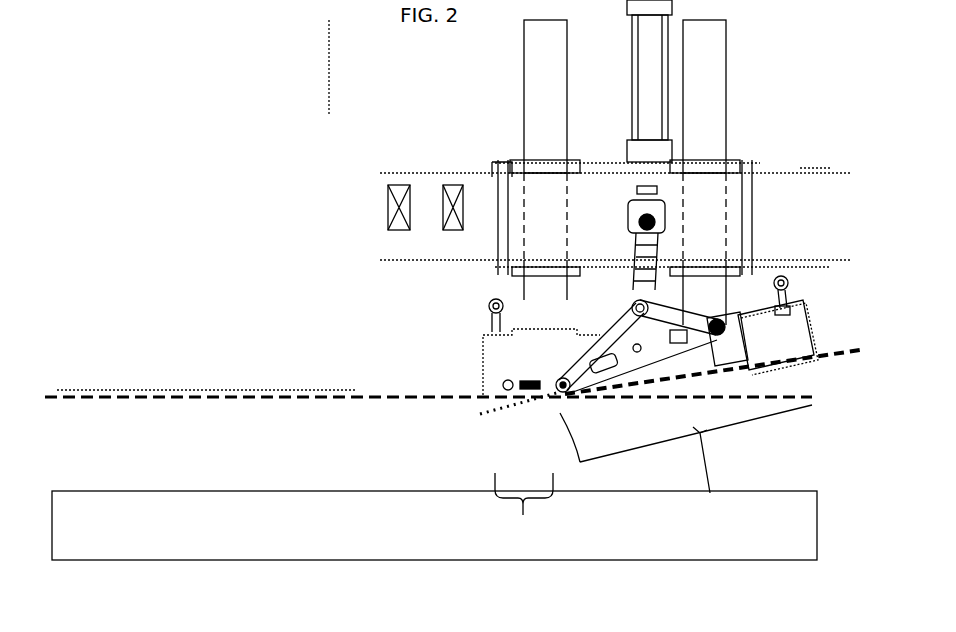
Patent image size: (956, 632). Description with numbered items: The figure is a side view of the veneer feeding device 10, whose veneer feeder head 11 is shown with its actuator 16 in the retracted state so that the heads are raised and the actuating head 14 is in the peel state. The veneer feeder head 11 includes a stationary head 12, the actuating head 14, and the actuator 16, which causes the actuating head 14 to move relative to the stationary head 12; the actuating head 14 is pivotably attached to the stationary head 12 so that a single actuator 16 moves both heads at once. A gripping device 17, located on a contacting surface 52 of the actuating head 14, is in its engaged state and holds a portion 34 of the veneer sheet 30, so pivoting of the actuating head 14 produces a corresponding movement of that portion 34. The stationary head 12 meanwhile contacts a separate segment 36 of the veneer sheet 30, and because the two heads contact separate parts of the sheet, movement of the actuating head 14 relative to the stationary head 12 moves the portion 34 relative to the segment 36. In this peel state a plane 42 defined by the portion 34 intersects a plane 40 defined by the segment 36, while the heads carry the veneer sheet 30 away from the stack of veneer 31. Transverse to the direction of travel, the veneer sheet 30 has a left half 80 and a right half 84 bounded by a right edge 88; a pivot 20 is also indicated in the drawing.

The veneer feeding device 10 is at (78, 40).
The veneer feeder head 11 is at (518, 108).
The stationary head 12 is at (500, 367).
The actuating head 14 is at (733, 370).
The actuator 16 is at (650, 78).
The gripping device 17 is at (690, 385).
The pivot linkage 20 is at (557, 413).
The veneer sheet 30 is at (405, 399).
The stack of veneer 31 is at (160, 548).
The portion of the veneer sheet 34 is at (711, 472).
The segment of the veneer sheet 36 is at (524, 514).
The plane defined by the segment 40 is at (733, 400).
The plane defined by the portion 42 is at (500, 420).
The contacting surface 52 is at (780, 362).
The left half 80 is at (269, 58).
The right half 84 is at (615, 138).
The right edge 88 is at (818, 362).